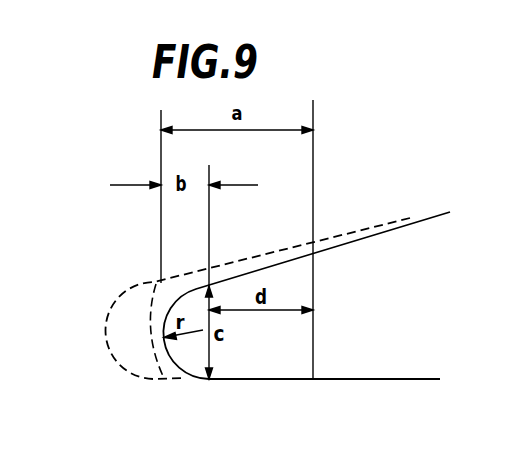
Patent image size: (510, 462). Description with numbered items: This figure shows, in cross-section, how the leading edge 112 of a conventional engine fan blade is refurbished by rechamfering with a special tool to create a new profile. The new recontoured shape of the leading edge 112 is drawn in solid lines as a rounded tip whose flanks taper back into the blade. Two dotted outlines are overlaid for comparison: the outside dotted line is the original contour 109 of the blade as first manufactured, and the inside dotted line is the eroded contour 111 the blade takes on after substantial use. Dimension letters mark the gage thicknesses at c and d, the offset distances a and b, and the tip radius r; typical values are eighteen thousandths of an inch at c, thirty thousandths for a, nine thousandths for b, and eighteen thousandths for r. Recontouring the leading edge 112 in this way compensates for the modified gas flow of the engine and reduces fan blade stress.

The original contour 109 is at (121, 294).
The eroded contour 111 is at (153, 356).
The leading edge 112 is at (181, 377).